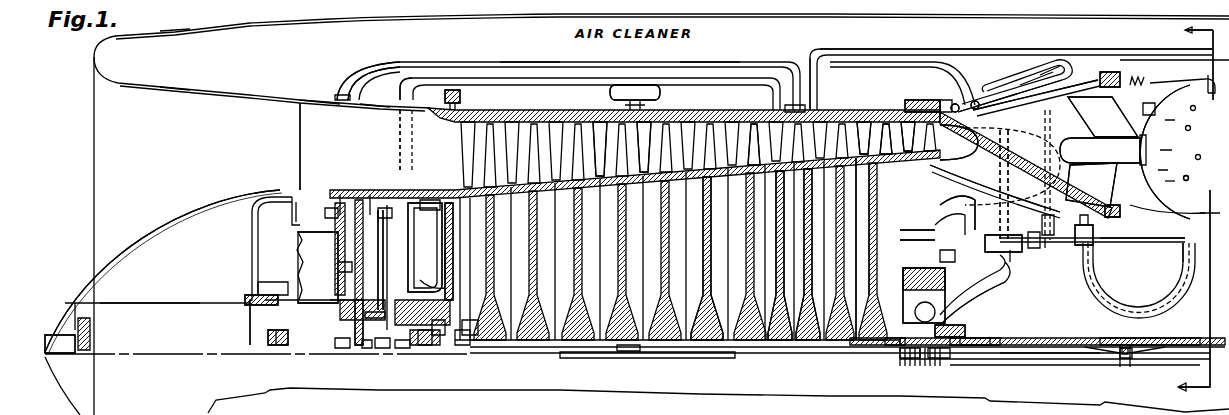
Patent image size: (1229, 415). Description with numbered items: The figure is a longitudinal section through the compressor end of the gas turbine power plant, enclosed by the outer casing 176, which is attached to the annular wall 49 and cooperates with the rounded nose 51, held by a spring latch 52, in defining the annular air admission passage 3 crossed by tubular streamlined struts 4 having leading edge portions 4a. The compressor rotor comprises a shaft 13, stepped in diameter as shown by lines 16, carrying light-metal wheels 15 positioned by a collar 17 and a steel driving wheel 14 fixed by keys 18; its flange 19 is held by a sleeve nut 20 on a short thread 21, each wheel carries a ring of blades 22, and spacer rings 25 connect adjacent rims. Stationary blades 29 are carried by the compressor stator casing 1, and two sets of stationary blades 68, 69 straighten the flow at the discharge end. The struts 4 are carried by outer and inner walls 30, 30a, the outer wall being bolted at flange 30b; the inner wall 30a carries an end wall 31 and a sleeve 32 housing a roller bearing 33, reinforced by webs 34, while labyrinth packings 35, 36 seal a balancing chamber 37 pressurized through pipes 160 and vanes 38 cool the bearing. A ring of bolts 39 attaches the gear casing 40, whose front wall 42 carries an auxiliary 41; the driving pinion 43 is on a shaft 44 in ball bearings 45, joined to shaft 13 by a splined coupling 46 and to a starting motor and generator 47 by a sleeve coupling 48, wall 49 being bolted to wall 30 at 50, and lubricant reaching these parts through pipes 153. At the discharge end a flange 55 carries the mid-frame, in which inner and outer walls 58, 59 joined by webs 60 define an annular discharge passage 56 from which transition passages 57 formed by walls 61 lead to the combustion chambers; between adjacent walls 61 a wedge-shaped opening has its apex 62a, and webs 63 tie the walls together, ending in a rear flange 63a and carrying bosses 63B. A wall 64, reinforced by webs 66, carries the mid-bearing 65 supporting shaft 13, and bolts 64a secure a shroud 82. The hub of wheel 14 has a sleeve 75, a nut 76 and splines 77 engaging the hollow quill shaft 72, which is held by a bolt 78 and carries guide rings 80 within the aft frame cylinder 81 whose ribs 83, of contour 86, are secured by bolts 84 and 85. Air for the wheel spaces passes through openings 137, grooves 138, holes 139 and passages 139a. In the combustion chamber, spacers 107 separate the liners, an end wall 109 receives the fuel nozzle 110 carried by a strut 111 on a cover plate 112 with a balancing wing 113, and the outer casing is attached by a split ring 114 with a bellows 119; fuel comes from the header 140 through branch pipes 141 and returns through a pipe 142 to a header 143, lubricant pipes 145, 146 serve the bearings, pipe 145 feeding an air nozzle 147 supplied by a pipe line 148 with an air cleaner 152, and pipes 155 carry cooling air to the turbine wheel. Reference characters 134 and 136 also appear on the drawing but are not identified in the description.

The compressor stator casing 1 is at (812, 112).
The annular passage 3 is at (1185, 209).
The tubular streamlined struts 4 is at (405, 145).
The streamlined leading edge portion 4a is at (300, 160).
The shaft 13 is at (482, 350).
The last stage wheel 14 is at (890, 195).
The wheels 15 is at (780, 340).
The lines 16 is at (565, 355).
The collar 17 is at (462, 348).
The keys 18 is at (866, 345).
The annular inwardly projecting flange 19 is at (895, 348).
The sleeve nut 20 is at (938, 350).
The short thread 21 is at (910, 350).
The ring of blades 22 is at (748, 125).
The spacer ring 25 is at (770, 170).
The stationary compressor blades 29 is at (600, 110).
The outer wall 30 is at (428, 105).
The inner wall 30a is at (428, 190).
The rear flange 30b is at (455, 92).
The radially inwardly extending wall 31 is at (448, 250).
The sleeve 32 is at (425, 280).
The roller bearing 33 is at (424, 348).
The radially extending webs 34 is at (392, 276).
The labyrinth packing arrangement 35 is at (470, 330).
The labyrinth packing 36 is at (450, 236).
The balancing chamber 37 is at (450, 233).
The vanes 38 is at (437, 345).
The ring of bolts 39 is at (350, 195).
The gear casing 40 is at (374, 195).
The auxiliary 41 is at (318, 267).
The front wall 42 is at (345, 300).
The common driving pinion 43 is at (358, 350).
The shaft 44 is at (366, 350).
The ball bearings 45 is at (340, 350).
The toothed or splined coupling 46 is at (402, 350).
The starting motor and generator 47 is at (138, 303).
The sleeve coupling 48 is at (282, 348).
The annular wall 49 is at (325, 104).
The bolted connection 50 is at (373, 106).
The rounded cap or nose 51 is at (158, 216).
The spring latch 52 is at (55, 355).
The flange 55 is at (920, 100).
The annular air discharge passage 56 is at (940, 130).
The transition passages 57 is at (1000, 130).
The inner annular wall 58 is at (945, 172).
The outer annular wall 59 is at (945, 100).
The circumferentially spaced webs 60 is at (908, 125).
The walls 61 is at (1010, 150).
The apex of wedge shaped opening 62a is at (940, 205).
The webs or bridges 63 is at (1070, 190).
The rear attachment flange 63a is at (1048, 248).
The attachment bosses 63B is at (1086, 125).
The inwardly extending wall 64 is at (935, 230).
The bolts 64a is at (950, 255).
The mid-bearing 65 is at (925, 268).
The axially extending webs 66 is at (935, 242).
The stationary blades 68 is at (855, 125).
The stationary blades 69 is at (880, 125).
The hollow quill shaft 72 is at (1160, 338).
The sleeve 75 is at (985, 338).
The nut 76 is at (955, 325).
The splines 77 is at (970, 343).
The bolt 78 is at (1072, 358).
The guide rings 80 is at (1125, 366).
The aft frame cylinder 81 is at (1140, 243).
The cylindrical shroud 82 is at (1012, 252).
The ribs 83 is at (1187, 245).
The bolts 84 is at (1012, 78).
The ring of bolts 85 is at (1045, 215).
The dotted line 86 is at (1185, 135).
The spacers 107 is at (1205, 90).
The end wall 109 is at (1175, 184).
The fuel nozzle 110 is at (1100, 150).
The tubular streamlined strut 111 is at (1103, 117).
The cover plate 112 is at (1070, 88).
The balancing wing 113 is at (1113, 175).
The split ring 114 is at (1110, 72).
The bellows structure 119 is at (1093, 240).
The bolt 134 is at (1188, 172).
The fitting 136 is at (1143, 109).
The openings 137 is at (645, 168).
The grooves 138 is at (627, 348).
The holes 139 is at (812, 340).
The passages 139a is at (990, 243).
The supply pipe 140 is at (955, 104).
The branch pipes 141 is at (1052, 66).
The return pipe 142 is at (1035, 78).
The header 143 is at (976, 100).
The pipe 145 is at (360, 70).
The pipe 146 is at (345, 85).
The air nozzle 147 is at (995, 290).
The pipe line 148 is at (710, 65).
The air cleaner 152 is at (630, 88).
The pipes 153 is at (370, 312).
The pipes 155 is at (905, 40).
The pipes 160 is at (528, 70).
The outer casing 176 is at (168, 88).